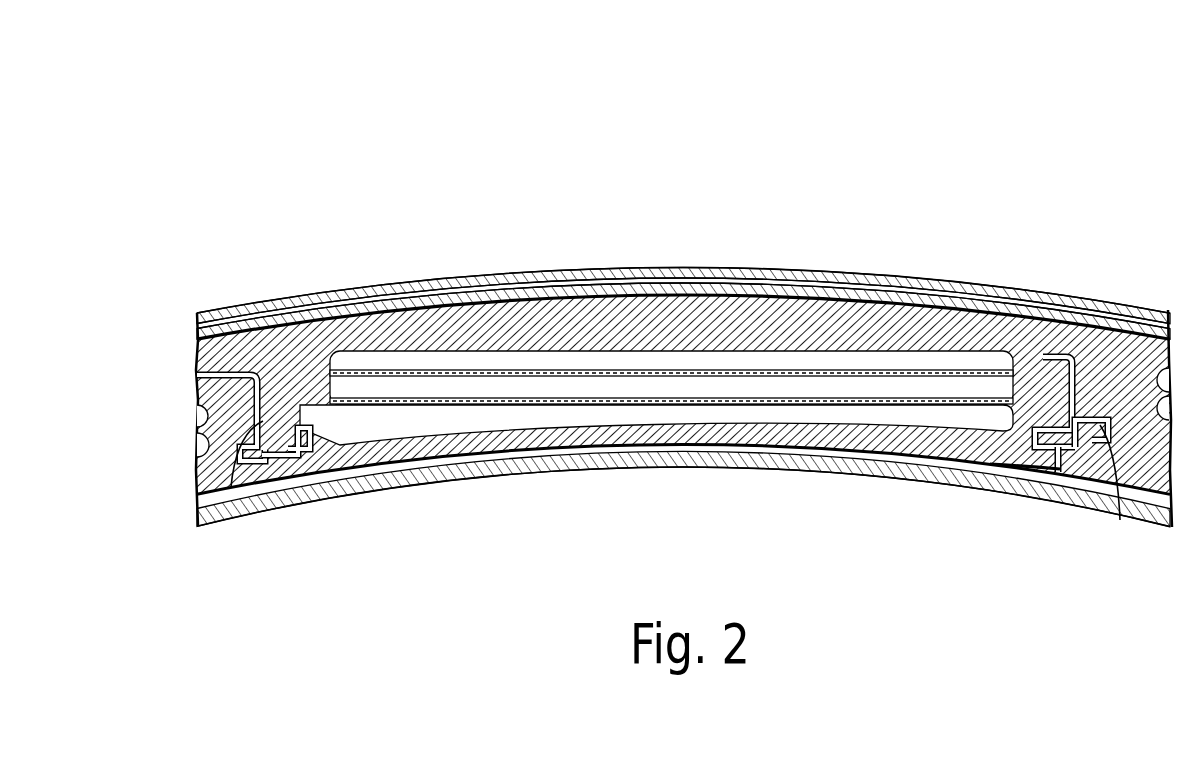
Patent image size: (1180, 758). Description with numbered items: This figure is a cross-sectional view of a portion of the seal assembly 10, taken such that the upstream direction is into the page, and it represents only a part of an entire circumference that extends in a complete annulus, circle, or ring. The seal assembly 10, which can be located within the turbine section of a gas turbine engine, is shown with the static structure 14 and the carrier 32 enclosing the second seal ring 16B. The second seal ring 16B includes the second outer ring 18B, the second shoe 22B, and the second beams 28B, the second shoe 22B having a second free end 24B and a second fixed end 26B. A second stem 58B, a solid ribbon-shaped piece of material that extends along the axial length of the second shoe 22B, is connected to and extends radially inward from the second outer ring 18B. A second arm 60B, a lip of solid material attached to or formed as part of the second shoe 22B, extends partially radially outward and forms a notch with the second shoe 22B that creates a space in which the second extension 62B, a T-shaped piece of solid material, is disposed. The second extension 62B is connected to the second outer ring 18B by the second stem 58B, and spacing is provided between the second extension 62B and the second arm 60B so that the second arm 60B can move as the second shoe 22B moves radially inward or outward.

The seal assembly 10 is at (316, 118).
The static structure 14 is at (640, 266).
The carrier 32 is at (252, 310).
The second seal ring 16B is at (293, 356).
The second outer ring 18B is at (932, 330).
The second shoe 22B is at (578, 446).
The second free end 24B is at (358, 475).
The second fixed end 26B is at (1014, 473).
The second beams 28B is at (797, 370).
The second stem 58B is at (1060, 419).
The second arm 60B is at (1103, 433).
The second extension 62B is at (262, 462).